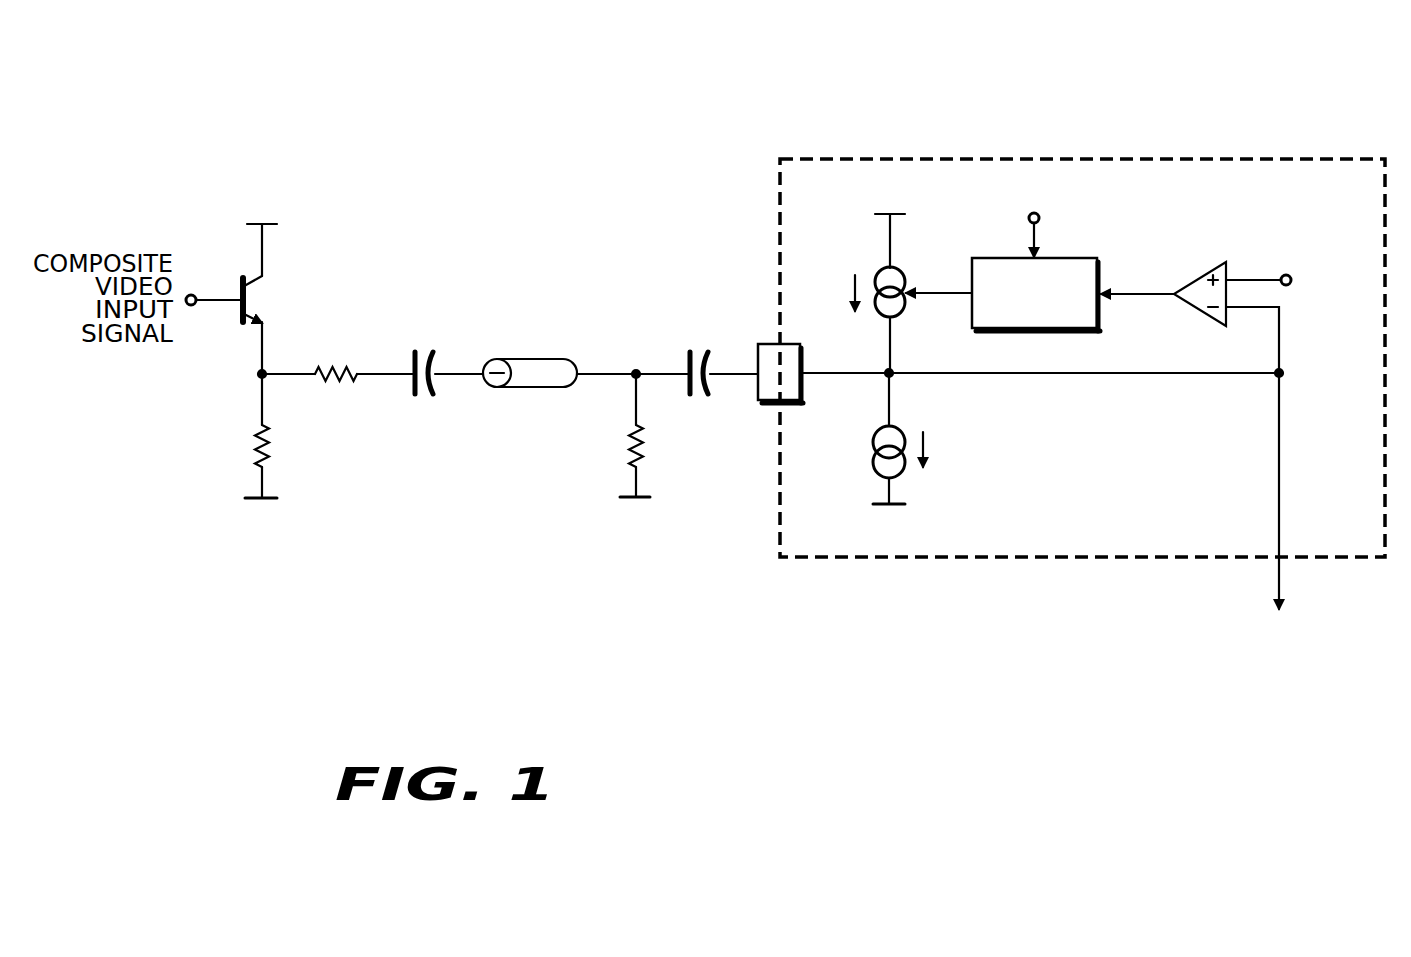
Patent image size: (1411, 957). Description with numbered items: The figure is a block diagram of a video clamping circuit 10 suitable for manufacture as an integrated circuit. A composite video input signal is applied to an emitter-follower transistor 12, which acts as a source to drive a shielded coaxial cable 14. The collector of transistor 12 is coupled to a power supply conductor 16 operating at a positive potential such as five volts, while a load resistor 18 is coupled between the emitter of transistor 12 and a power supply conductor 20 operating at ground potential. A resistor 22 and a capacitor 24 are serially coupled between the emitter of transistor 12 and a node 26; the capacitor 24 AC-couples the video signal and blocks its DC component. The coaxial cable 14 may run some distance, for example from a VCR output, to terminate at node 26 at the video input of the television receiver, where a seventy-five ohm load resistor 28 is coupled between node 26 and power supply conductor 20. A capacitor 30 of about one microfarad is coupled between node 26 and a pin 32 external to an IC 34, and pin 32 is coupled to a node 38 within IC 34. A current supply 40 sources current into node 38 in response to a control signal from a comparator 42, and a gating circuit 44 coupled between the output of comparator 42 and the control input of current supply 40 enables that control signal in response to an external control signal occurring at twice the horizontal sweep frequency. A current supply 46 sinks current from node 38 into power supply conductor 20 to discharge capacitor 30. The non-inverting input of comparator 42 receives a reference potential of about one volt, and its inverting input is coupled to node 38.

The video clamping circuit 10 is at (621, 674).
The emitter-follower transistor 12 is at (256, 298).
The shielded coaxial cable 14 is at (525, 390).
The power supply conductor 16 is at (268, 226).
The load resistor 18 is at (254, 442).
The power supply conductor 20 is at (268, 500).
The resistor 22 is at (337, 390).
The capacitor 24 is at (425, 348).
The node 26 is at (636, 367).
The load resistor 28 is at (646, 449).
The capacitor 30 is at (700, 348).
The pin 32 is at (805, 398).
The IC 34 is at (1285, 158).
The node 38 is at (893, 378).
The current supply 40 is at (905, 278).
The comparator 42 is at (1192, 310).
The gating circuit 44 is at (1080, 256).
The current supply 46 is at (870, 455).